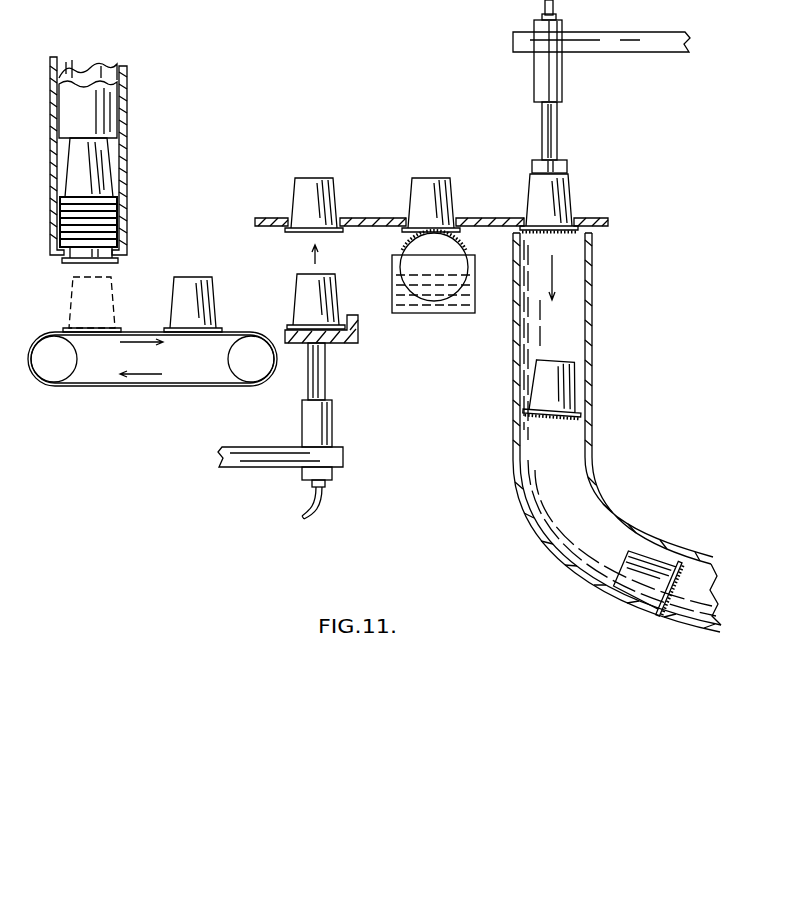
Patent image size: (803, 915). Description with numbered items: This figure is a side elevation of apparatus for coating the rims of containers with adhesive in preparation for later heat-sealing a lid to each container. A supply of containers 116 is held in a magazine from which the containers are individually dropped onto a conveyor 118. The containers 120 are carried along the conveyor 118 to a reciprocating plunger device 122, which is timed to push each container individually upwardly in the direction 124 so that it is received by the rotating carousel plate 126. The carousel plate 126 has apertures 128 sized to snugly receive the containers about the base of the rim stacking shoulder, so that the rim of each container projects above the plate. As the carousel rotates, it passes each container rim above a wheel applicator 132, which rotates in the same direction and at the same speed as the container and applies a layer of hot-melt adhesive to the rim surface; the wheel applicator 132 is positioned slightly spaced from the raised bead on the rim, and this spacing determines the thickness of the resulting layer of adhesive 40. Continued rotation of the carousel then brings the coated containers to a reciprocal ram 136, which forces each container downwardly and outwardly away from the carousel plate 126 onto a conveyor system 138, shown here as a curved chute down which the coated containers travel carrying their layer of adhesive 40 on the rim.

The supply of containers 116 is at (127, 162).
The conveyor 118 is at (92, 388).
The containers 120 is at (112, 287).
The reciprocating plunger device 122 is at (325, 375).
The direction of container movement 124 is at (310, 259).
The carousel plate 126 is at (262, 218).
The apertures 128 is at (341, 212).
The wheel applicator 132 is at (424, 321).
The reciprocal ram 136 is at (534, 76).
The conveyor system 138 is at (592, 327).
The layer of adhesive 40 is at (568, 415).